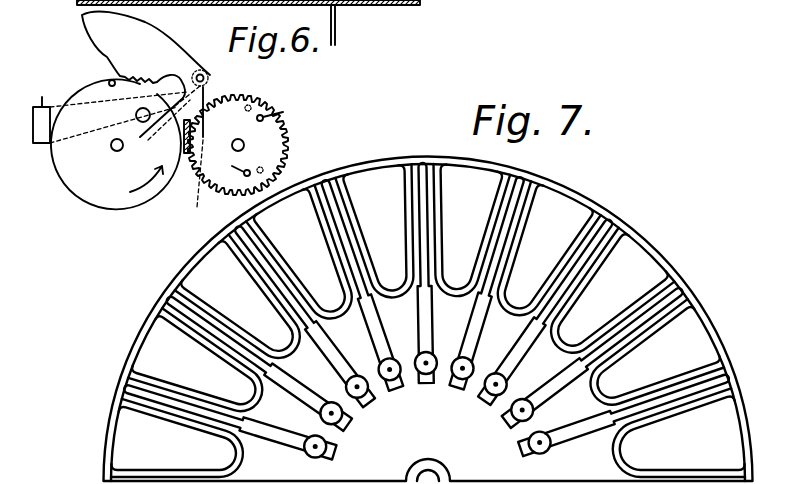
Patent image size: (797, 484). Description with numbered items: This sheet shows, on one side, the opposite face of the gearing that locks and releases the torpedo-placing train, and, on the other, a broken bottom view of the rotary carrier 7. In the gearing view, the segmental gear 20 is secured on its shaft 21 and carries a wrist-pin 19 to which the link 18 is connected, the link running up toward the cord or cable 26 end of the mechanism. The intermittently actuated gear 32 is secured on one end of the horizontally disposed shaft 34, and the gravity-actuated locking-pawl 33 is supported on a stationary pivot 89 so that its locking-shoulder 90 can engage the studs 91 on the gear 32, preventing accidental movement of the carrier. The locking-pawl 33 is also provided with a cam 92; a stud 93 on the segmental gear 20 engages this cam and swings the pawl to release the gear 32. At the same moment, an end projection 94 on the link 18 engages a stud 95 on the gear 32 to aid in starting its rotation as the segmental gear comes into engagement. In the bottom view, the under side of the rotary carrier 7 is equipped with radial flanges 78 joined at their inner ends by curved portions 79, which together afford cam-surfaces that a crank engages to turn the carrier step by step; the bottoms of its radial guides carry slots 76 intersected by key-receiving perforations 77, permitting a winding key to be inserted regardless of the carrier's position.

In FIG. 7, the rotary carrier 7 is at (428, 319).
In FIG. 6, the link 18 is at (110, 105).
In FIG. 6, the wrist-pin 19 is at (136, 115).
In FIG. 6, the segmental gear 20 is at (80, 192).
In FIG. 6, the shaft 21 is at (111, 150).
In FIG. 6, the cord or cable 26 is at (336, 22).
In FIG. 6, the intermittently actuated gear 32 is at (245, 143).
In FIG. 6, the locking-pawl 33 is at (146, 54).
In FIG. 6, the horizontally disposed shaft 34 is at (289, 123).
In FIG. 7, the slots 76 is at (675, 427).
In FIG. 7, the key-receiving perforations 77 is at (390, 370).
In FIG. 7, the radial flanges 78 is at (150, 407).
In FIG. 7, the curved portions 79 is at (253, 387).
In FIG. 6, the stationary pivot 89 is at (210, 78).
In FIG. 6, the locking-shoulder 90 is at (234, 119).
In FIG. 6, the studs 91 is at (285, 112).
In FIG. 6, the cam 92 is at (143, 133).
In FIG. 6, the stud 93 is at (109, 81).
In FIG. 6, the end projection 94 is at (200, 70).
In FIG. 6, the stud 95 is at (203, 140).